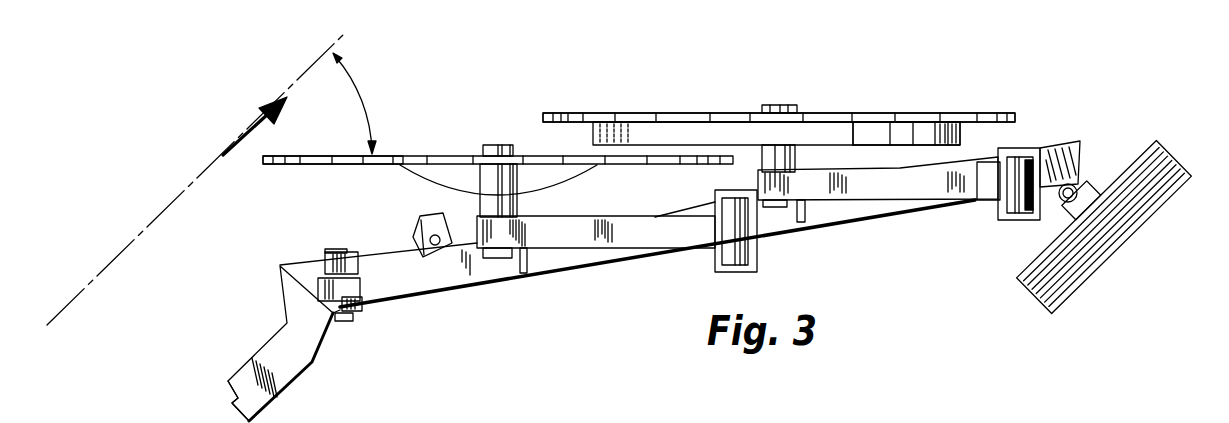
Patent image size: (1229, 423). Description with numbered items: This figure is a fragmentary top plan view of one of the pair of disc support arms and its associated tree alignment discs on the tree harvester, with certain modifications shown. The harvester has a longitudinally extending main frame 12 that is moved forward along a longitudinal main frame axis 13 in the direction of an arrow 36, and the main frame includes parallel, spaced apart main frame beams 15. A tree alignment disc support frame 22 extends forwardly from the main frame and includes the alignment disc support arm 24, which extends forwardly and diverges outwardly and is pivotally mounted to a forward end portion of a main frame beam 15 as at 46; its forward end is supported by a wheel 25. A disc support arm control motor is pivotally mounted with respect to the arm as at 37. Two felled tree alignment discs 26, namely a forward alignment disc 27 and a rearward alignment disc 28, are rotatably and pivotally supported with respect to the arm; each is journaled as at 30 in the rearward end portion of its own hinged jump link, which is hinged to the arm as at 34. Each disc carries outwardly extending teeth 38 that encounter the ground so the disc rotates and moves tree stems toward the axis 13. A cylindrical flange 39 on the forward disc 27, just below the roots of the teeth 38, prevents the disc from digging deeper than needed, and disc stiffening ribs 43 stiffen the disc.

The main frame 12 is at (280, 342).
The longitudinal main frame axis 13 is at (193, 182).
The main frame beam 15 is at (245, 387).
The tree alignment disc support frame 22 is at (598, 269).
The alignment disc support arm 24 is at (415, 262).
The wheel 25 is at (1148, 180).
The felled tree alignment disc 26 is at (408, 160).
The forward alignment disc 27 is at (828, 113).
The rearward alignment disc 28 is at (295, 157).
The journal 30 is at (503, 238).
The hinge 34 is at (740, 230).
The arrow 36 is at (245, 132).
The pivot mount 37 is at (422, 225).
The teeth 38 is at (575, 118).
The cylindrical flange 39 is at (868, 132).
The disc stiffening rib 43 is at (567, 175).
The pivotal mounting 46 is at (348, 320).